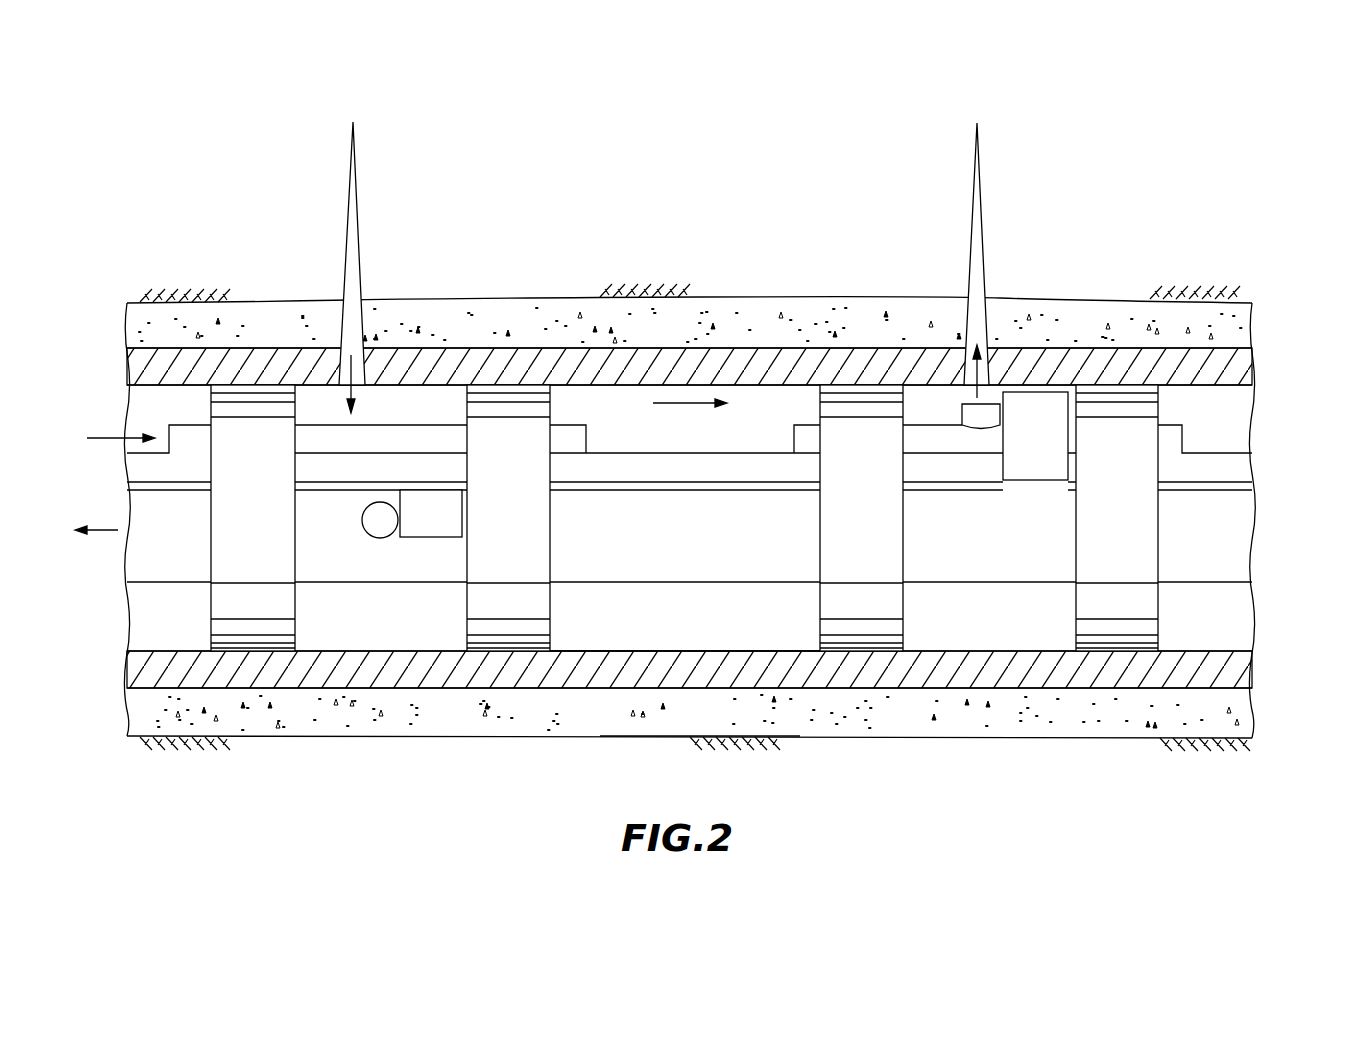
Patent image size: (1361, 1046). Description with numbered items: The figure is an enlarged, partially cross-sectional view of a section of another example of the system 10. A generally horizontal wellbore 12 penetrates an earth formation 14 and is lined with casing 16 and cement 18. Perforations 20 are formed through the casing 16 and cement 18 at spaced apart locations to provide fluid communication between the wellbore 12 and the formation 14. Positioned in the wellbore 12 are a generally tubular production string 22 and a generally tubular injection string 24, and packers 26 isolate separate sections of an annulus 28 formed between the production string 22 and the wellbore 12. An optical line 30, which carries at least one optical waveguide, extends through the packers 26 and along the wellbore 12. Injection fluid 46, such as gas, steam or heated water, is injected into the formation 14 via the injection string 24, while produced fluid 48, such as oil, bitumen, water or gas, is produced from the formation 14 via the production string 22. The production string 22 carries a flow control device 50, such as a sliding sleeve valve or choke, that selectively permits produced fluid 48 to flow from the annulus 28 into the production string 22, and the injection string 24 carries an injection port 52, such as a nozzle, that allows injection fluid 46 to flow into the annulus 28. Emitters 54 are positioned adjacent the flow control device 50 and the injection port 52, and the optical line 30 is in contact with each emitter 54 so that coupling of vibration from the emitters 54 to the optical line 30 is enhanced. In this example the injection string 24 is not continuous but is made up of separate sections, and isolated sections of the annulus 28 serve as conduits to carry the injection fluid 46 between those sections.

The system 10 is at (1222, 136).
The wellbore 12 is at (704, 650).
The earth formation 14 is at (785, 130).
The casing 16 is at (780, 690).
The cement 18 is at (677, 735).
The perforations 20 is at (353, 148).
The production string 22 is at (143, 586).
The injection string 24 is at (1188, 428).
The packers 26 is at (237, 385).
The annulus 28 is at (622, 630).
The optical line 30 is at (717, 470).
The injection fluid 46 is at (95, 432).
The produced fluid 48 is at (100, 526).
The flow control device 50 is at (362, 582).
The injection port 52 is at (960, 410).
The emitters 54 is at (443, 540).